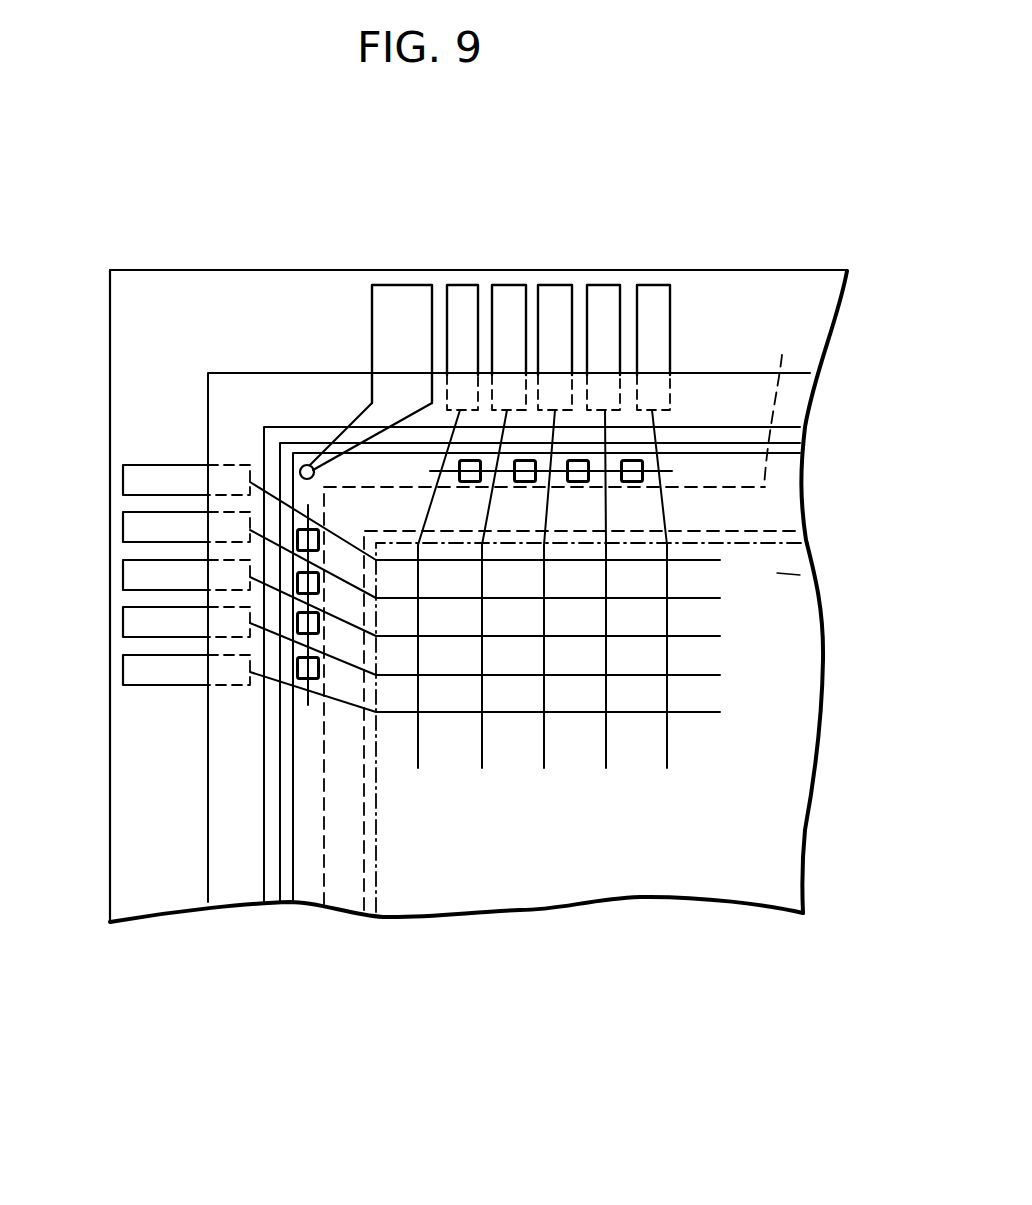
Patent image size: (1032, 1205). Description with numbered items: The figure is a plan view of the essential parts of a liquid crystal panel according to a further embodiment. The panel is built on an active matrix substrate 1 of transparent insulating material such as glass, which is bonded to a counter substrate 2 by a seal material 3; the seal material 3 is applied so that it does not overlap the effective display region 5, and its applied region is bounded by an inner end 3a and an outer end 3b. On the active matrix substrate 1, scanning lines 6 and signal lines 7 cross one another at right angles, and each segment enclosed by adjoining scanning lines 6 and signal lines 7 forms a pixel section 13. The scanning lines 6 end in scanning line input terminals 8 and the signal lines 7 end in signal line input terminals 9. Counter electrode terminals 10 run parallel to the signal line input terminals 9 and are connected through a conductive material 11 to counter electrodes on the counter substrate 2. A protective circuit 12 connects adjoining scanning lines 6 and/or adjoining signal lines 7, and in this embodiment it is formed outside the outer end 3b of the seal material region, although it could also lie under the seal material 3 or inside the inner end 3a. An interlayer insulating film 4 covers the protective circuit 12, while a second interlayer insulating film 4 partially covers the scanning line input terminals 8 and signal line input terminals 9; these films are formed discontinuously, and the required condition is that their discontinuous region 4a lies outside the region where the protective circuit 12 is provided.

The active matrix substrate 1 is at (827, 283).
The counter substrate 2 is at (787, 472).
The seal material 3 is at (788, 508).
The inner end 3a is at (810, 545).
The outer end 3b is at (561, 613).
The interlayer insulating film 4 is at (790, 410).
The discontinuous region 4a is at (803, 435).
The effective display region 5 is at (777, 573).
The scanning lines 6 is at (720, 636).
The signal lines 7 is at (667, 768).
The scanning line input terminals 8 is at (123, 580).
The signal line input terminals 9 is at (650, 284).
The counter electrode terminals 10 is at (405, 284).
The conductive material 11 is at (307, 464).
The protective circuit 12 is at (642, 460).
The pixel section 13 is at (655, 705).